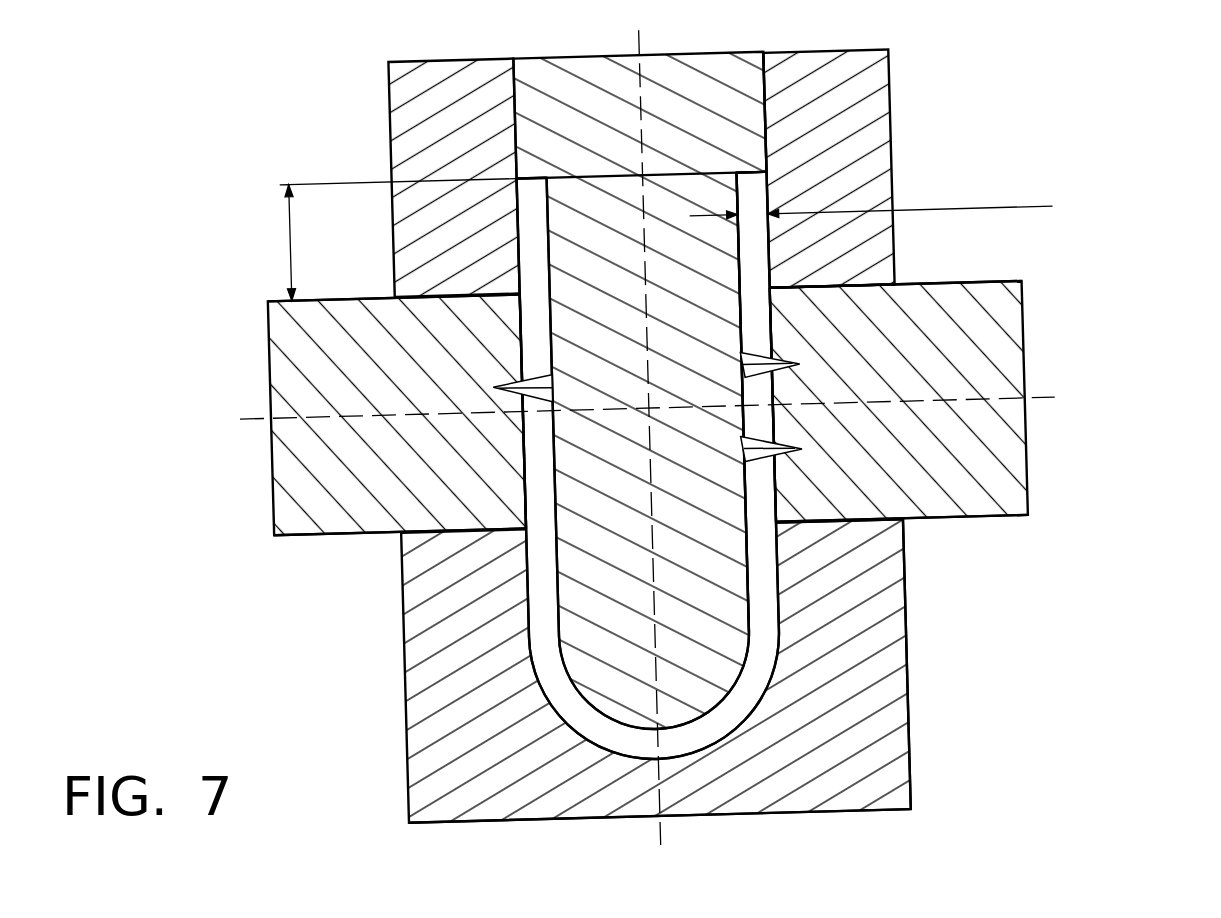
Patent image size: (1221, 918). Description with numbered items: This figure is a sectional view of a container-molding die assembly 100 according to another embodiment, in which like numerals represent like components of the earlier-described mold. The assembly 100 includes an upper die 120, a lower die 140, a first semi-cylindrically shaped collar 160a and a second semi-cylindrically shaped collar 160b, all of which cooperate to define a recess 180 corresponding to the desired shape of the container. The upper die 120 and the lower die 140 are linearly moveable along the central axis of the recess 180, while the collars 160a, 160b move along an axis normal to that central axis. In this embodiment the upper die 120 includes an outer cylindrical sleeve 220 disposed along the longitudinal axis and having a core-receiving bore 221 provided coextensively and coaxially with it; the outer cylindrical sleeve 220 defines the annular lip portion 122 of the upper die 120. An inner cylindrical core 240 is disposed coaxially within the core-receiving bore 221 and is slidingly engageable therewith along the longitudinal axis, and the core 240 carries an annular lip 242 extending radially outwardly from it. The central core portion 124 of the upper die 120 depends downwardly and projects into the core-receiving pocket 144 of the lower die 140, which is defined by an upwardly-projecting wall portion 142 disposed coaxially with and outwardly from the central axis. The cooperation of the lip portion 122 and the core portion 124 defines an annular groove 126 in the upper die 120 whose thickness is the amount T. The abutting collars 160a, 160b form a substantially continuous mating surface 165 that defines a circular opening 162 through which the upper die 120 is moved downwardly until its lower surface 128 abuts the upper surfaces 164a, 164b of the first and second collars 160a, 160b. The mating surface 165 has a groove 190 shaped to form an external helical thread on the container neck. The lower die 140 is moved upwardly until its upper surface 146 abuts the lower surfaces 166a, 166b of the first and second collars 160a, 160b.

The container-molding die assembly 100 is at (675, 437).
The upper die 120 is at (650, 467).
The annular lip portion 122 is at (758, 402).
The central core portion 124 is at (655, 697).
The annular groove 126 is at (752, 172).
The lower surface 128 is at (832, 285).
The lower die 140 is at (656, 670).
The upwardly-projecting wall portion 142 is at (907, 664).
The core-receiving pocket 144 is at (660, 816).
The upper surface 146 is at (839, 520).
The first semi-cylindrically shaped collar 160a is at (397, 415).
The second semi-cylindrically shaped collar 160b is at (899, 401).
The circular opening 162 is at (523, 412).
The upper surface of first collar 164a is at (394, 298).
The upper surface of second collar 164b is at (896, 284).
The mating surface 165 is at (773, 405).
The lower surface of first collar 166a is at (400, 531).
The lower surface of second collar 166b is at (902, 518).
The recess 180 is at (523, 408).
The groove 190 is at (647, 409).
The outer cylindrical sleeve 220 is at (828, 168).
The core-receiving bore 221 is at (764, 112).
The inner cylindrical core 240 is at (647, 392).
The annular lip 242 is at (453, 178).